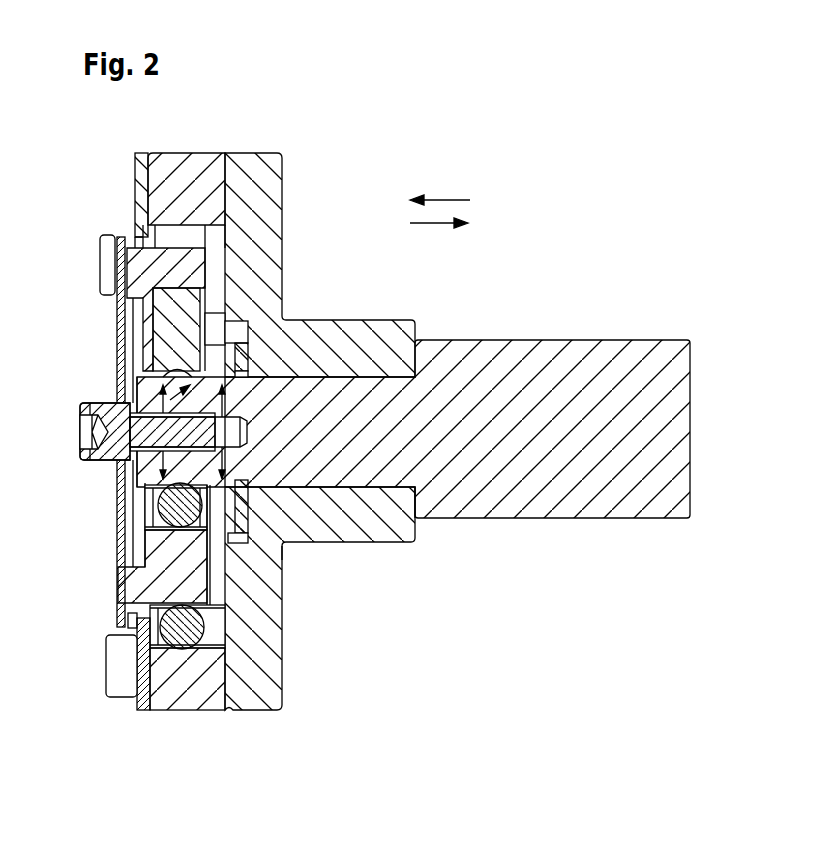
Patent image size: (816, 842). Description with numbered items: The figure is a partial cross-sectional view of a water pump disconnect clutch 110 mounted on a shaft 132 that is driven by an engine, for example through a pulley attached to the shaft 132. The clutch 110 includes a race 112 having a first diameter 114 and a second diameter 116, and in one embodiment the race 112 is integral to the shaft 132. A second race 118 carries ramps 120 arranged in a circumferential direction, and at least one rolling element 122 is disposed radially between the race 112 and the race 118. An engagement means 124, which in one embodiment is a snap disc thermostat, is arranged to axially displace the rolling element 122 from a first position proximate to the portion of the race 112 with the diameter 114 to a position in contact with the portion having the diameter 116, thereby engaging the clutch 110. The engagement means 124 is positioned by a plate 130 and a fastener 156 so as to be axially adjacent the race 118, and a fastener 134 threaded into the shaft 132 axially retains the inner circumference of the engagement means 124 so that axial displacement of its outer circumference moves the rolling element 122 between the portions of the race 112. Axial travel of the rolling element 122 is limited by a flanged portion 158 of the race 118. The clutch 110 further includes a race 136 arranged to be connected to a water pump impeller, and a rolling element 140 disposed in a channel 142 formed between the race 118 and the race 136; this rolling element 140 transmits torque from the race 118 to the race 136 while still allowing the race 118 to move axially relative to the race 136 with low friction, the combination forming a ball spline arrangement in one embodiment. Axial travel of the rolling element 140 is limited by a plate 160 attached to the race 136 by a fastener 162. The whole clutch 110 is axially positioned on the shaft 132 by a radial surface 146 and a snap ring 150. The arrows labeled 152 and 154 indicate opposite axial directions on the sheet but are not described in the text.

The water pump disconnect clutch 110 is at (418, 147).
The race 112 is at (133, 393).
The diameter 114 is at (129, 431).
The diameter 116 is at (284, 328).
The race 118 is at (145, 590).
The ramps 120 is at (122, 547).
The rolling element 122 is at (125, 505).
The engagement means 124 is at (121, 330).
The plate 130 is at (123, 272).
The shaft 132 is at (540, 338).
The fastener 134 is at (113, 463).
The race 136 is at (150, 657).
The rolling element 140 is at (128, 620).
The channel 142 is at (210, 627).
The radial surface 146 is at (423, 507).
The snap ring 150 is at (285, 560).
The first axial direction 152 is at (440, 190).
The second axial direction 154 is at (439, 235).
The fastener 156 is at (87, 440).
The flanged portion 158 is at (115, 530).
The plate 160 is at (140, 710).
The fastener 162 is at (122, 687).